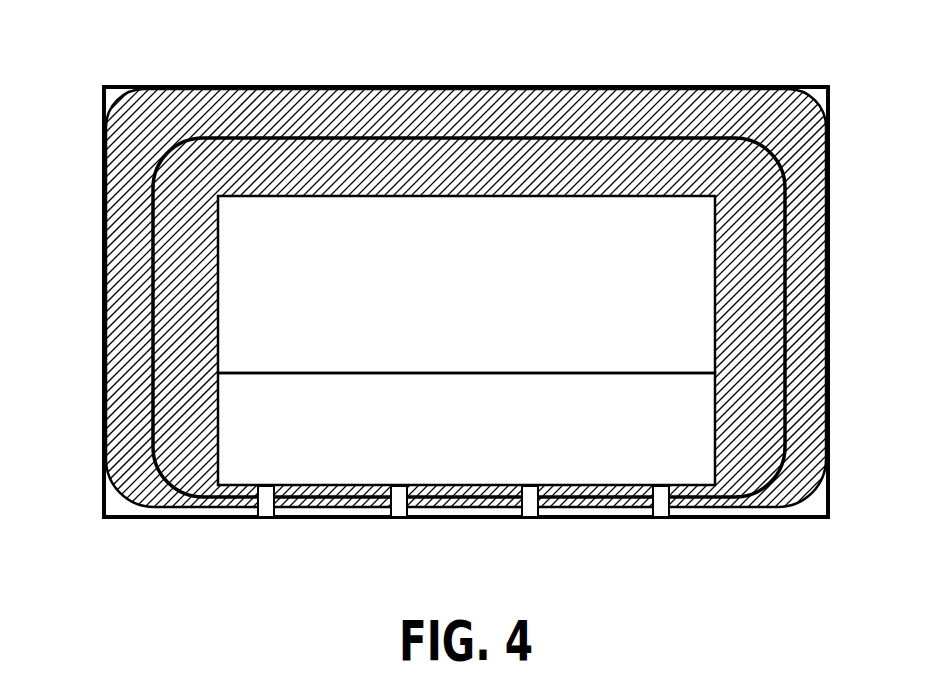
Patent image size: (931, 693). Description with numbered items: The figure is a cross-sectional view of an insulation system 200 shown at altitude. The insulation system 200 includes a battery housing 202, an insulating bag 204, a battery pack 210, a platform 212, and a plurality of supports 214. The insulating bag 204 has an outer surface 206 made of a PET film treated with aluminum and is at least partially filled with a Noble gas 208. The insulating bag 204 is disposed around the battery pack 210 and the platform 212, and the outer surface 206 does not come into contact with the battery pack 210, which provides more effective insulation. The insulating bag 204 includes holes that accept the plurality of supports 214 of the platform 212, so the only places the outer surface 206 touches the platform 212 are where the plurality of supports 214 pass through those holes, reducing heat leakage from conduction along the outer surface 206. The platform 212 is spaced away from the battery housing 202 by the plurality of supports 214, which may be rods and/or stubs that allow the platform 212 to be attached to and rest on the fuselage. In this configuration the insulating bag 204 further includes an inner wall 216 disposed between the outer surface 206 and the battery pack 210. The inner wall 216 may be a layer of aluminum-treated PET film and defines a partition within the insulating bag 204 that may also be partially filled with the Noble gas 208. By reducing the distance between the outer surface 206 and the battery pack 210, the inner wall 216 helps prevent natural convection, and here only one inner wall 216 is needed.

The insulation system 200 is at (260, 52).
The battery housing 202 is at (543, 86).
The insulating bag 204 is at (220, 110).
The outer surface 206 is at (110, 90).
The Noble gas 208 is at (289, 120).
The battery pack 210 is at (443, 273).
The platform 212 is at (443, 432).
The plurality of supports 214 is at (255, 517).
The inner wall 216 is at (152, 247).